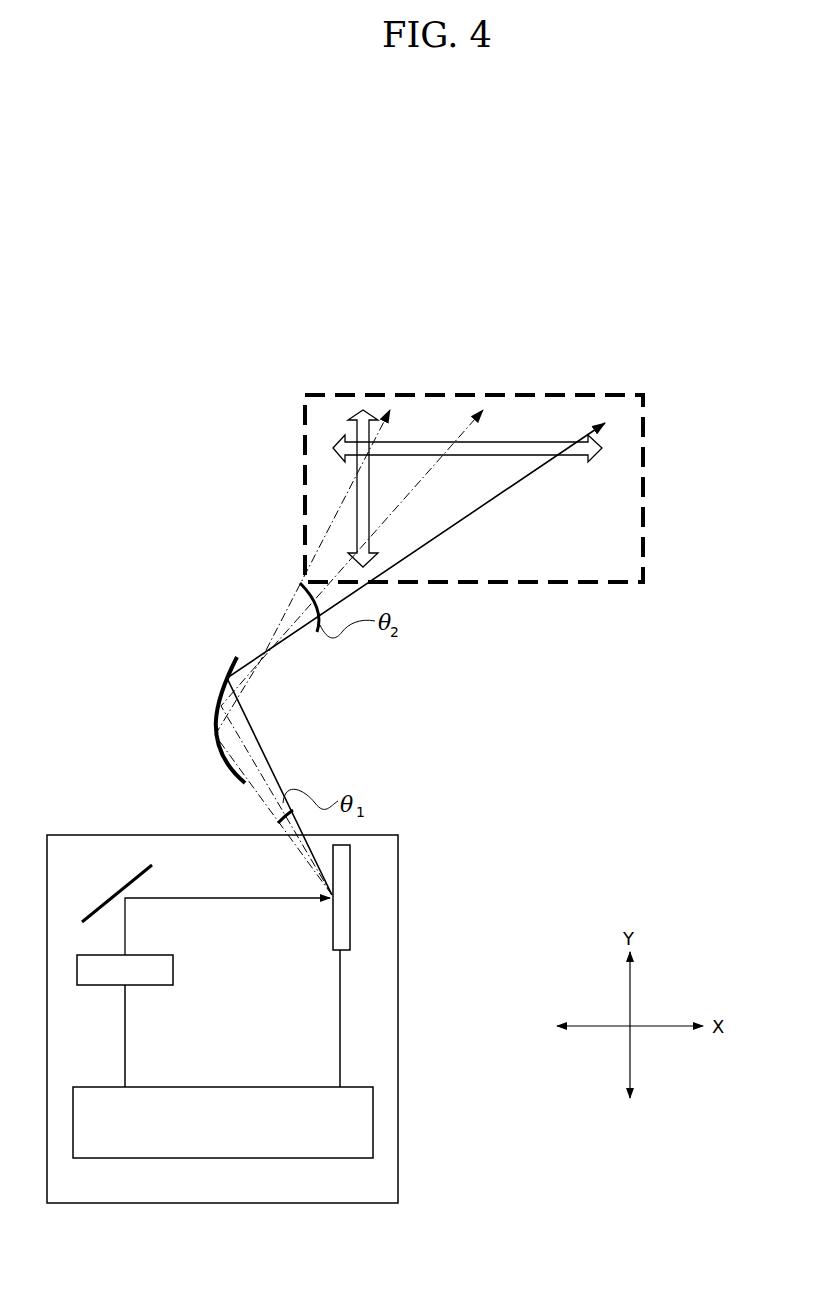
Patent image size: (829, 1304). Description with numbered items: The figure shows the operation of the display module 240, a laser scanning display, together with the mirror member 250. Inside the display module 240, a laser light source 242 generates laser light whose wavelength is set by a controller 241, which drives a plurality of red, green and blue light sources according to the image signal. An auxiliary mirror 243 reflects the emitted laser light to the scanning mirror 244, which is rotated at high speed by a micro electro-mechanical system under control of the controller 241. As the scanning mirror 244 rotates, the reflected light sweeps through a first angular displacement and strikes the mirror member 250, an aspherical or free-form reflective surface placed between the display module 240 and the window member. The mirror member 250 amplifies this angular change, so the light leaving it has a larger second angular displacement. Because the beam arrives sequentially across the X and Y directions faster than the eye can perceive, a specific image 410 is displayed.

The image 410 is at (555, 413).
The mirror member 250 is at (222, 693).
The display module 240 is at (398, 1005).
The controller 241 is at (260, 1086).
The laser light source 242 is at (152, 985).
The auxiliary mirror 243 is at (105, 902).
The scanning mirror 244 is at (328, 923).